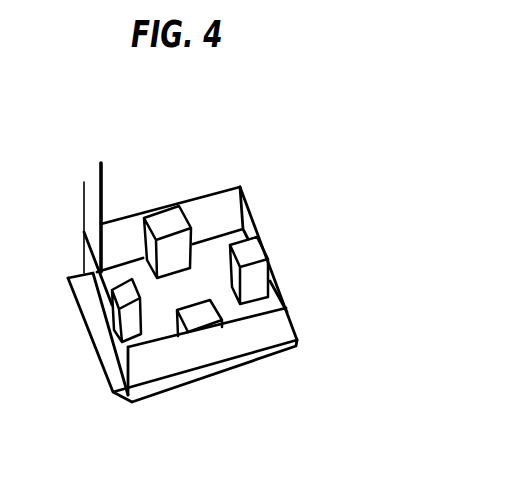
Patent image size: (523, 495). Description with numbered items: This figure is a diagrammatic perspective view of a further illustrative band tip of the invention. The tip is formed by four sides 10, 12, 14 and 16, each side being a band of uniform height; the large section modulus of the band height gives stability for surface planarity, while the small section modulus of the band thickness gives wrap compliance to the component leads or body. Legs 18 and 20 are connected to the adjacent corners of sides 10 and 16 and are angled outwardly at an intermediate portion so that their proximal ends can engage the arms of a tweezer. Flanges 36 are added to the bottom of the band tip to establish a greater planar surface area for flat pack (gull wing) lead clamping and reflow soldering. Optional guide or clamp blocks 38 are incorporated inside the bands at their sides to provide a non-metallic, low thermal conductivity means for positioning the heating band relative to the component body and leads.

The side 10 is at (131, 214).
The side 12 is at (273, 270).
The side 14 is at (265, 321).
The side 16 is at (93, 274).
The leg 18 is at (84, 198).
The leg 20 is at (103, 190).
The flanges 36 is at (102, 363).
The guide or clamp blocks 38 is at (250, 253).